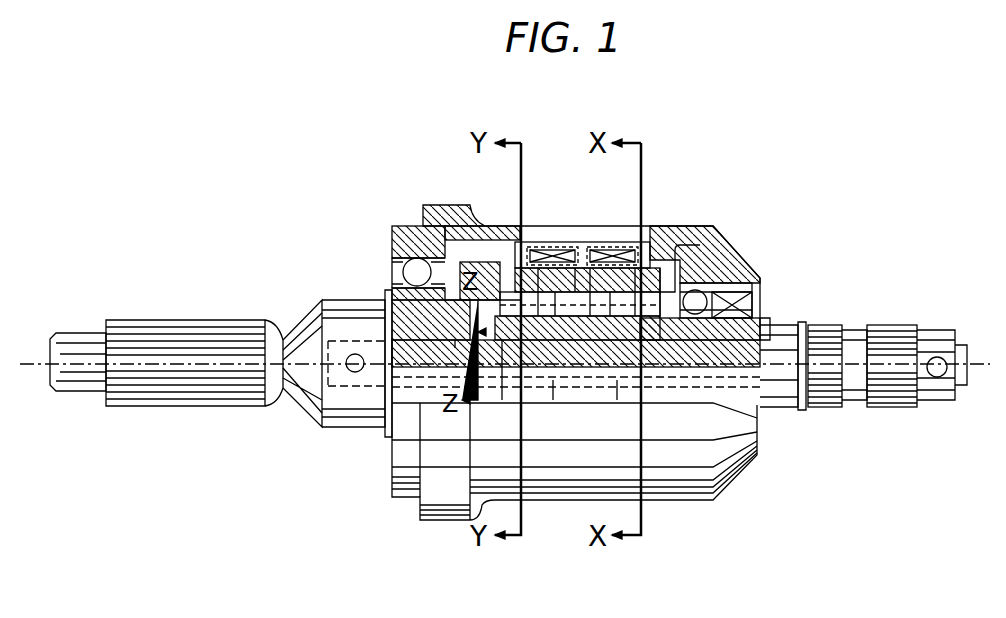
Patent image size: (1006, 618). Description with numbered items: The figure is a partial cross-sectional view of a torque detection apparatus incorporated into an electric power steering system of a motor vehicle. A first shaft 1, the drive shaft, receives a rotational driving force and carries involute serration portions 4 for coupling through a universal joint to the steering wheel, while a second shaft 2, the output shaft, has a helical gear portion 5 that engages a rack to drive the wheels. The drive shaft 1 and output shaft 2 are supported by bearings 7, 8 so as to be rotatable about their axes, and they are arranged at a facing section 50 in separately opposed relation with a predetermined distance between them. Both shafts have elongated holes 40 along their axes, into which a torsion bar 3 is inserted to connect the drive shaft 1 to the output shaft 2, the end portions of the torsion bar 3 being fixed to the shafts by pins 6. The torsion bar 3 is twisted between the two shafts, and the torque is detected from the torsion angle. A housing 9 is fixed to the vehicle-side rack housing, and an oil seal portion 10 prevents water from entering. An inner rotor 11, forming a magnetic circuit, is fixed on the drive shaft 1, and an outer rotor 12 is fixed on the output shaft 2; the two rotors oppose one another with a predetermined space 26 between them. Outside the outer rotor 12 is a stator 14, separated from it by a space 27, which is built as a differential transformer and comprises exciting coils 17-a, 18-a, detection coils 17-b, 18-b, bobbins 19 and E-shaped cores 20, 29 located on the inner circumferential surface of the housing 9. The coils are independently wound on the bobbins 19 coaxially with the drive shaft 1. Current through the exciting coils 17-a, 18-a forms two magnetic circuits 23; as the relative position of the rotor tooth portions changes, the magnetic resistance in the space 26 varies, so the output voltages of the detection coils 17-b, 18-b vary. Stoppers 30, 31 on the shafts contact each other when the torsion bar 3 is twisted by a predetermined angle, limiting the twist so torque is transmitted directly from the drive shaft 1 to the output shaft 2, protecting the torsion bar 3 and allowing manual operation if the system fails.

The first shaft 1 is at (936, 335).
The second shaft 2 is at (65, 380).
The torsion bar 3 is at (782, 380).
The involute serration portions 4 is at (826, 410).
The helical gear portion 5 is at (152, 380).
The pins 6 is at (353, 372).
The bearing 7 is at (700, 290).
The bearing 8 is at (400, 240).
The housing 9 is at (543, 487).
The oil seal portion 10 is at (745, 300).
The inner rotor 11 is at (690, 240).
The outer rotor 12 is at (665, 270).
The stator 14 is at (520, 245).
The exciting coil 17-a is at (535, 255).
The detection coil 17-b is at (545, 260).
The exciting coil 18-a is at (600, 255).
The detection coil 18-b is at (610, 262).
The bobbins 19 is at (552, 265).
The core 20 is at (560, 268).
The magnetic circuits 23 is at (553, 380).
The space 26 is at (510, 350).
The space 27 is at (470, 225).
The core 29 is at (500, 240).
The stopper 30 is at (452, 325).
The stopper 31 is at (392, 278).
The elongated holes 40 is at (756, 330).
The facing section 50 is at (458, 348).